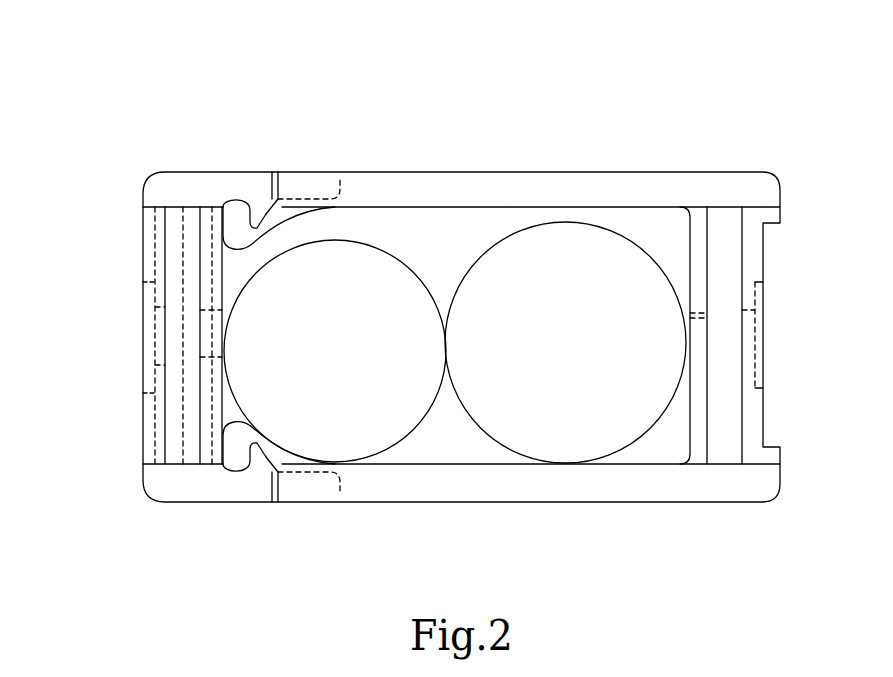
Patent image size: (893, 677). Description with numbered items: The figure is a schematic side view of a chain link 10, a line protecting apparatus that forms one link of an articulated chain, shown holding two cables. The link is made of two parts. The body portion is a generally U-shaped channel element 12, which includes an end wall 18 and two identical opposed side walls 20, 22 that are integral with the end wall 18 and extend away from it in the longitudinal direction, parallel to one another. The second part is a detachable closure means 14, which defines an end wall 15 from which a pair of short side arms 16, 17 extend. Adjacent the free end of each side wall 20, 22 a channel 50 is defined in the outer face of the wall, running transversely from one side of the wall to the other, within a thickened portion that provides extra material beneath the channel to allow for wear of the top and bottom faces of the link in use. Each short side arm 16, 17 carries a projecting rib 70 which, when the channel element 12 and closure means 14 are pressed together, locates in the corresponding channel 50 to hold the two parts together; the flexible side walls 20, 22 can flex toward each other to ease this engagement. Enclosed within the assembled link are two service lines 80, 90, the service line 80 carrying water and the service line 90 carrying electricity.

The chain link 10 is at (440, 307).
The U-shaped channel element 12 is at (708, 485).
The detachable closure means 14 is at (170, 491).
The end wall 15 is at (143, 318).
The short side arm 16 is at (226, 185).
The short side arm 17 is at (222, 492).
The end wall 18 is at (730, 272).
The side wall 20 is at (618, 495).
The side wall 22 is at (607, 187).
The channel 50 is at (230, 230).
The projecting rib 70 is at (260, 192).
The service line 80 is at (579, 358).
The service line 90 is at (349, 358).